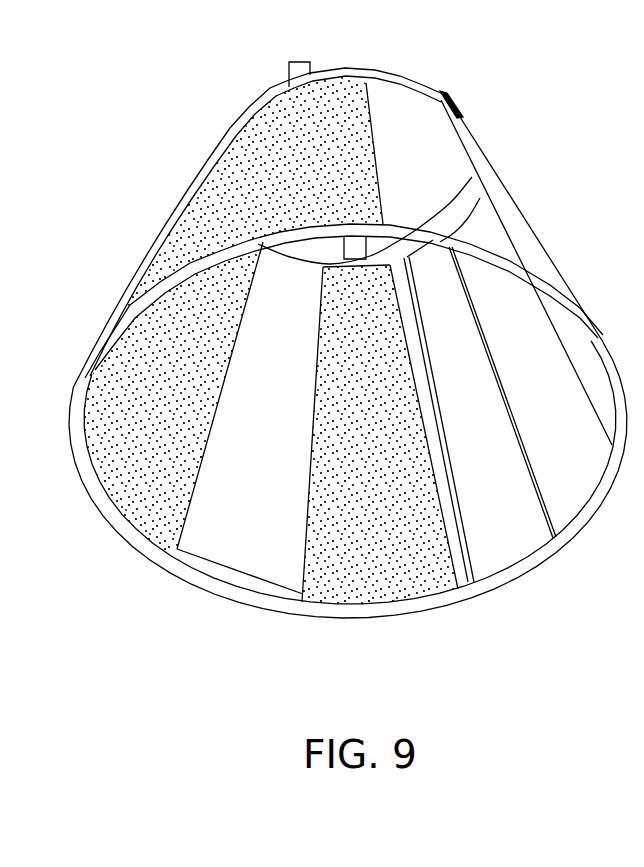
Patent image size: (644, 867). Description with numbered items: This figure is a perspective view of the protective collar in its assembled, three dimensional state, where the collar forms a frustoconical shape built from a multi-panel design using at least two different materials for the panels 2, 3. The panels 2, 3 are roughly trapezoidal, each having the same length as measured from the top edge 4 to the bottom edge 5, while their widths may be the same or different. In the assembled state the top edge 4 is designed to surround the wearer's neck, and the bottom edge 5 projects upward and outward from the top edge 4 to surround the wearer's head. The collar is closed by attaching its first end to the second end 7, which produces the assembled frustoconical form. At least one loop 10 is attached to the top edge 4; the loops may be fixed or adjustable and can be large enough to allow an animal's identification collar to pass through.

The panel 2 is at (233, 315).
The panel 3 is at (394, 338).
The top edge 4 is at (338, 228).
The bottom edge 5 is at (348, 421).
The second end 7 is at (380, 434).
The loop 10 is at (375, 147).